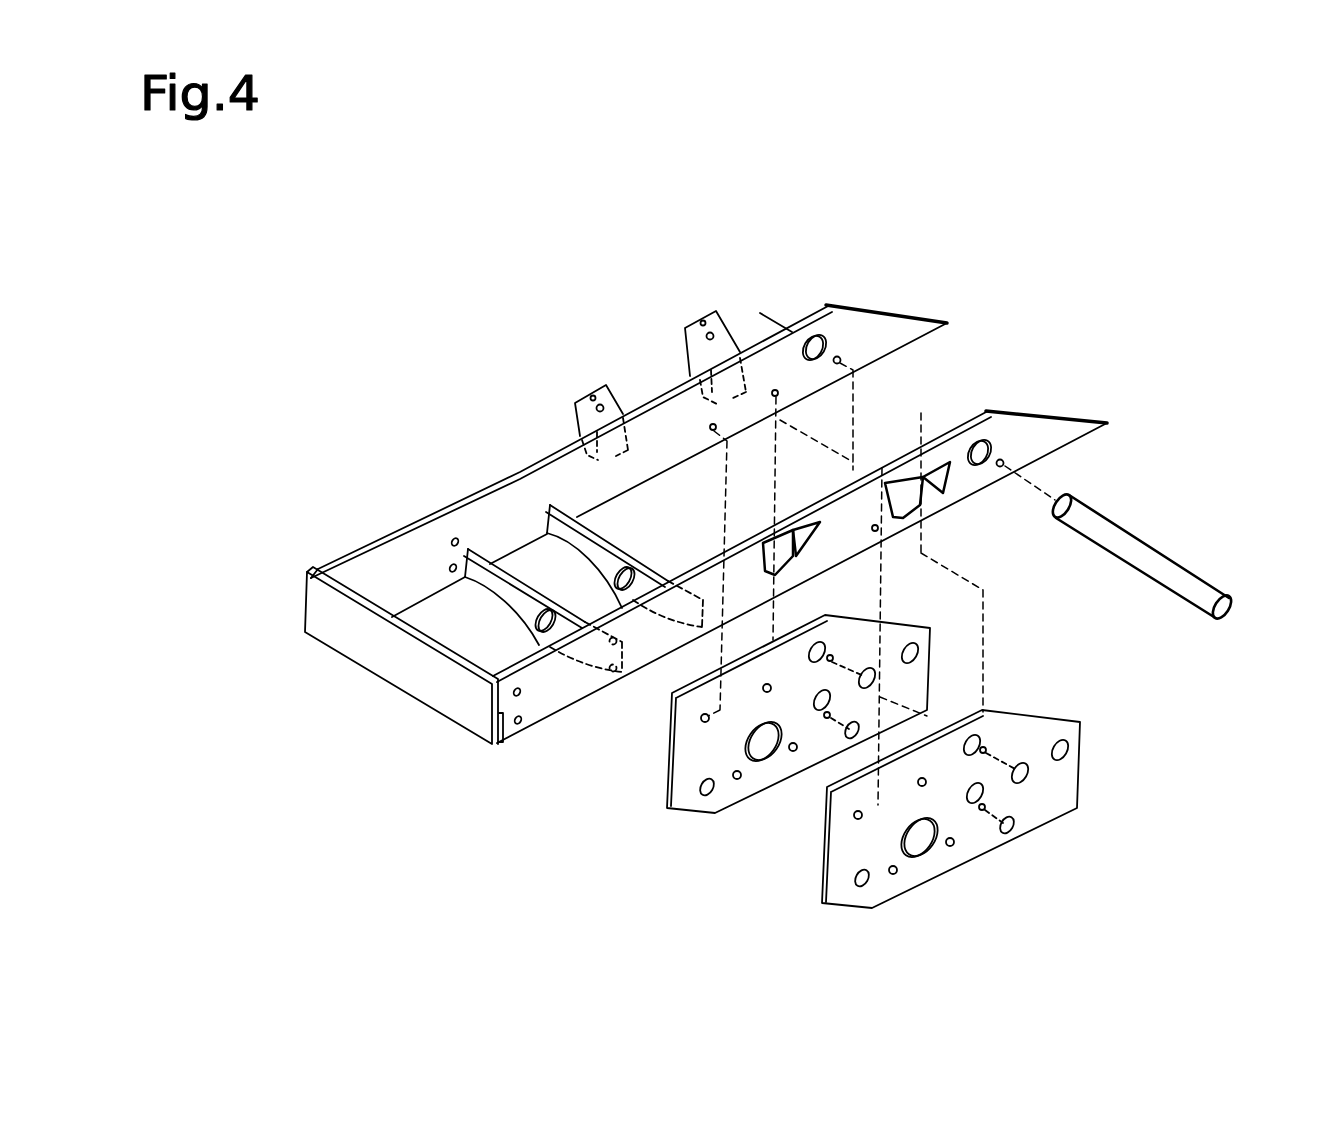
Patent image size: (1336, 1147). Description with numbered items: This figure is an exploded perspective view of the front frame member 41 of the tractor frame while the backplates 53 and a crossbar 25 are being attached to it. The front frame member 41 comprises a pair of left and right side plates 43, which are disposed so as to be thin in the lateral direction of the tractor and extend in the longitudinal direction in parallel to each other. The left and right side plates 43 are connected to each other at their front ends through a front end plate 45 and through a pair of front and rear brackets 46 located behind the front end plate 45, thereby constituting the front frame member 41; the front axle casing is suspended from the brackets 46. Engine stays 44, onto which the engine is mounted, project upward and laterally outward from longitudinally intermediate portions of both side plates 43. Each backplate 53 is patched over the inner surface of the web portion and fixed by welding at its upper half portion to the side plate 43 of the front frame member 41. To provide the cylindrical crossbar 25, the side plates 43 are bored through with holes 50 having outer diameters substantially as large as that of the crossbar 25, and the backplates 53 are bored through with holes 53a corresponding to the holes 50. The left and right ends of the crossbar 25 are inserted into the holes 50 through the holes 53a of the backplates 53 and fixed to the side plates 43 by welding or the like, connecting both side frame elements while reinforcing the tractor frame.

The front frame member 41 is at (402, 410).
The side plate 43 is at (387, 556).
The engine stay 44 is at (632, 385).
The front end plate 45 is at (376, 659).
The bracket 46 is at (590, 552).
The hole 50 is at (822, 338).
The crossbar 25 is at (1167, 567).
The backplate 53 is at (687, 806).
The hole 53a is at (814, 641).